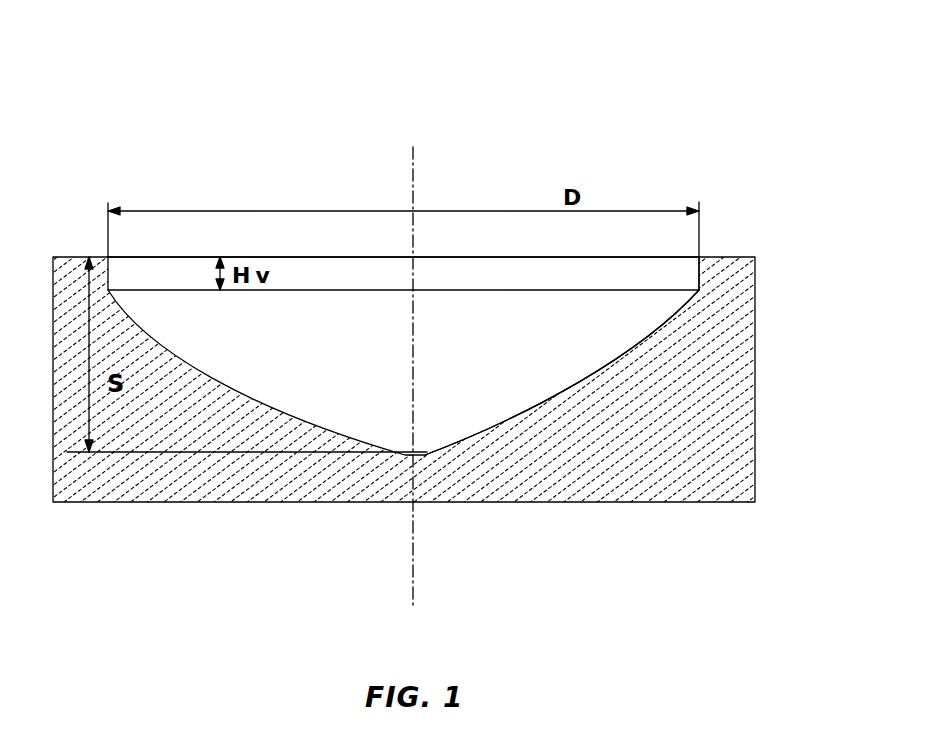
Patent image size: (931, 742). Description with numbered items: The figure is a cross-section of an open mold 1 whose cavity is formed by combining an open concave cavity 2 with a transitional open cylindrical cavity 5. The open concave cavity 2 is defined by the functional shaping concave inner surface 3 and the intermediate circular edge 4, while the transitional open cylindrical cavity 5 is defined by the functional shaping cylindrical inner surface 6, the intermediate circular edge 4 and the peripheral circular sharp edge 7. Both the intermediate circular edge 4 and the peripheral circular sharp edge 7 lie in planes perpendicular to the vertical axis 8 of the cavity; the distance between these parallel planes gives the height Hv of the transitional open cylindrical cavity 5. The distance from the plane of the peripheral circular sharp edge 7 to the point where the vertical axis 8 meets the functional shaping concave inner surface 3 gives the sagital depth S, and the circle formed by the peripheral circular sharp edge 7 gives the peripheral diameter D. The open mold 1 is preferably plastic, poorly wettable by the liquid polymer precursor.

The open mold 1 is at (635, 425).
The open concave cavity 2 is at (320, 365).
The functional shaping concave inner surface 3 is at (617, 362).
The intermediate circular edge 4 is at (185, 290).
The transitional open cylindrical cavity 5 is at (285, 275).
The functional shaping cylindrical inner surface 6 is at (699, 275).
The peripheral circular sharp edge 7 is at (185, 257).
The vertical axis 8 is at (415, 583).